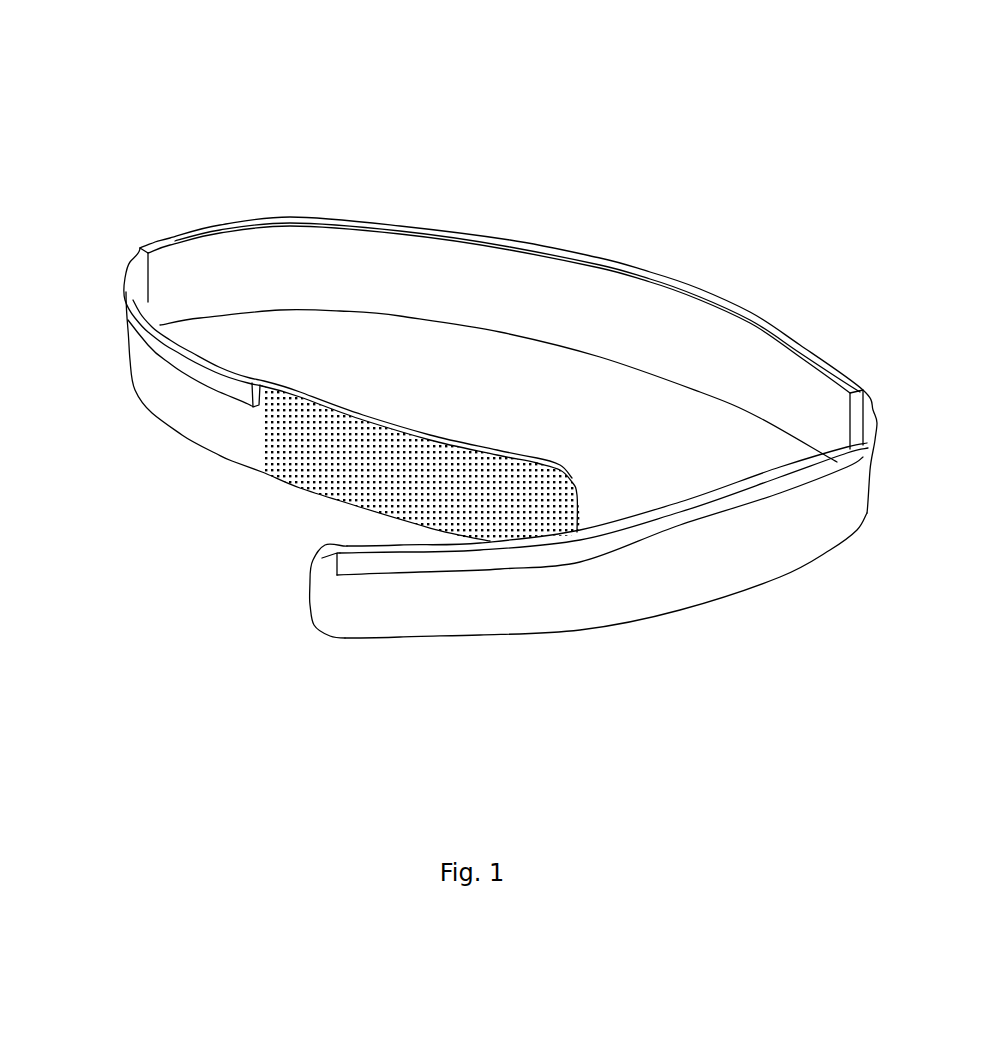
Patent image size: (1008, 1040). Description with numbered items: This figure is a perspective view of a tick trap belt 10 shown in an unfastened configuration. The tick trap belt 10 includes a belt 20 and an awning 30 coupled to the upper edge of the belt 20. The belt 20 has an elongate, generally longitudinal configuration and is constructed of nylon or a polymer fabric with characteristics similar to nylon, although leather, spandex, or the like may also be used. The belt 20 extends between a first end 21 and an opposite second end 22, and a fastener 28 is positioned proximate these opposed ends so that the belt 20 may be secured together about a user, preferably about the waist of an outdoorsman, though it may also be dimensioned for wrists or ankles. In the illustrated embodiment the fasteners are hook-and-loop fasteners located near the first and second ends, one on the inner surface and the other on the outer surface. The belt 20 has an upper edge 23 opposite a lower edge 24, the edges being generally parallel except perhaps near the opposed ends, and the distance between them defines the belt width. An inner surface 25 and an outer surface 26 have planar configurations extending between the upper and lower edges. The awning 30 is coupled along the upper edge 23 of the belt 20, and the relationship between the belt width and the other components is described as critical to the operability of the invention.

The tick trap belt 10 is at (593, 115).
The belt 20 is at (136, 217).
The first end 21 is at (572, 486).
The second end 22 is at (309, 598).
The upper edge 23 is at (294, 400).
The lower edge 24 is at (232, 461).
The inner surface 25 is at (647, 308).
The outer surface 26 is at (728, 576).
The fastener 28 is at (432, 470).
The awning 30 is at (158, 341).